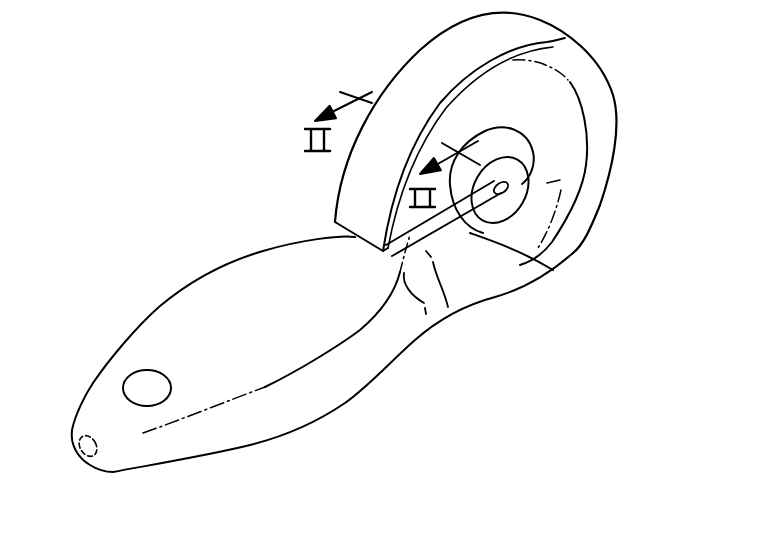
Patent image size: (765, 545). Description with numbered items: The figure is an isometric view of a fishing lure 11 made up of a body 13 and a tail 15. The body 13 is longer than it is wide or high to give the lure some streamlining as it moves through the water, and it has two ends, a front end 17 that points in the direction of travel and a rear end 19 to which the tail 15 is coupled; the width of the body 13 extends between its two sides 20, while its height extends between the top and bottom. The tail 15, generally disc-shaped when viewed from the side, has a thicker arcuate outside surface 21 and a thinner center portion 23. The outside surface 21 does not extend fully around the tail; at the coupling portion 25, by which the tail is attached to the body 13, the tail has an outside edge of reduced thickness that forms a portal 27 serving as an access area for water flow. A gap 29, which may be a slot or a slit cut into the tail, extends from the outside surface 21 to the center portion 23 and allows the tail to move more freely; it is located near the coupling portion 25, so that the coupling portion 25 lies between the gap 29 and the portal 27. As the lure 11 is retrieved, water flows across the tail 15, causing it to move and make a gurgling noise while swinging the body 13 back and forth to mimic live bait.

The fishing lure 11 is at (137, 277).
The body 13 is at (109, 402).
The tail 15 is at (547, 83).
The front end 17 is at (82, 452).
The rear end 19 is at (403, 307).
The sides 20 is at (310, 383).
The outside surface 21 is at (615, 97).
The center portion 23 is at (602, 203).
The coupling portion 25 is at (453, 270).
The portal 27 is at (460, 307).
The gap 29 is at (553, 270).